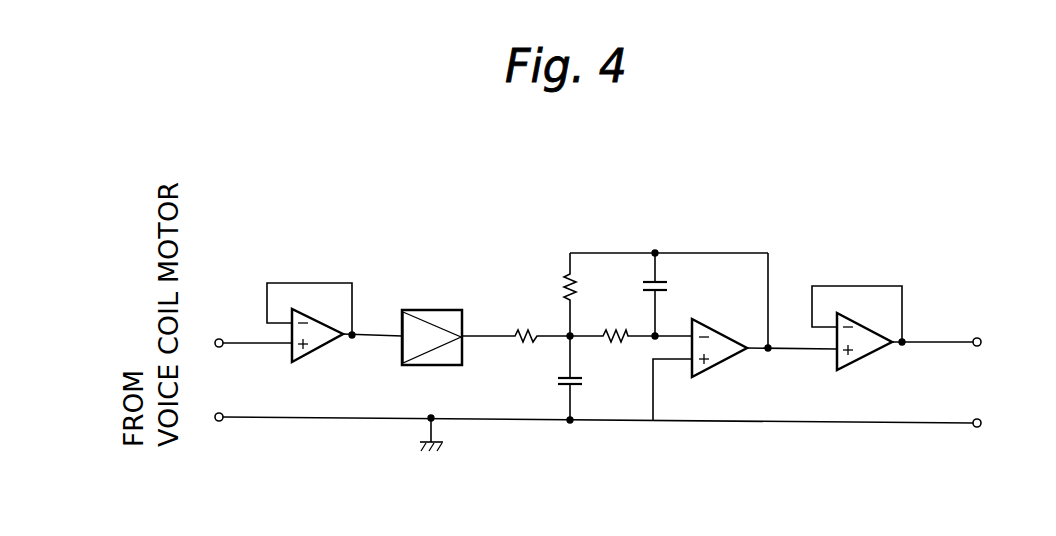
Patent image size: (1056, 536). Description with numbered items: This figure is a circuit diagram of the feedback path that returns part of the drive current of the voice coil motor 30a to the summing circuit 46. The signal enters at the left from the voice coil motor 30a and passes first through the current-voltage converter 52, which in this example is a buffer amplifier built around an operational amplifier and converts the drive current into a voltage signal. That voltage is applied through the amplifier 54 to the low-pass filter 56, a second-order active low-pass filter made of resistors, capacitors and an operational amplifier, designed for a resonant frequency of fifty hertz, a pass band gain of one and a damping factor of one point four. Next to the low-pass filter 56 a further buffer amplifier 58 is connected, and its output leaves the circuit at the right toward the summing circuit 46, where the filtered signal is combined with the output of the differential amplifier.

The voice coil motor 30a is at (237, 393).
The current-voltage converter 52 is at (334, 283).
The amplifier 54 is at (457, 300).
The low-pass filter 56 is at (674, 301).
The buffer amplifier 58 is at (892, 292).
The summing circuit 46 is at (1013, 347).